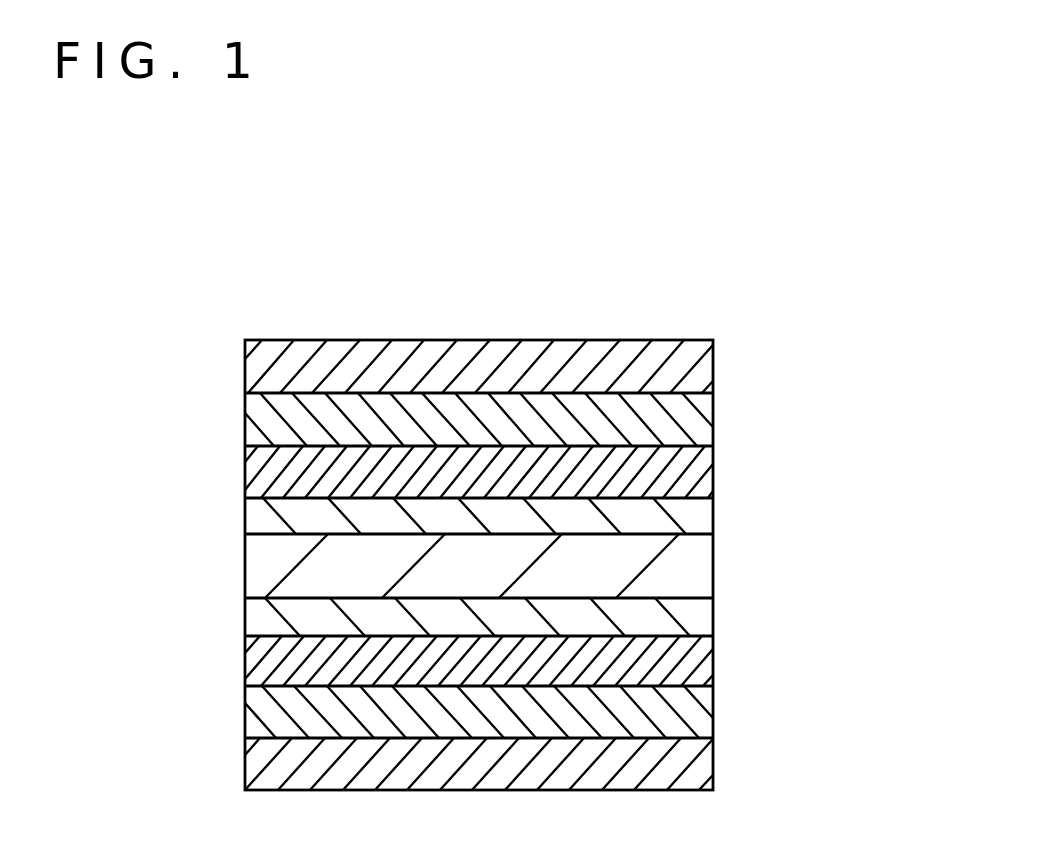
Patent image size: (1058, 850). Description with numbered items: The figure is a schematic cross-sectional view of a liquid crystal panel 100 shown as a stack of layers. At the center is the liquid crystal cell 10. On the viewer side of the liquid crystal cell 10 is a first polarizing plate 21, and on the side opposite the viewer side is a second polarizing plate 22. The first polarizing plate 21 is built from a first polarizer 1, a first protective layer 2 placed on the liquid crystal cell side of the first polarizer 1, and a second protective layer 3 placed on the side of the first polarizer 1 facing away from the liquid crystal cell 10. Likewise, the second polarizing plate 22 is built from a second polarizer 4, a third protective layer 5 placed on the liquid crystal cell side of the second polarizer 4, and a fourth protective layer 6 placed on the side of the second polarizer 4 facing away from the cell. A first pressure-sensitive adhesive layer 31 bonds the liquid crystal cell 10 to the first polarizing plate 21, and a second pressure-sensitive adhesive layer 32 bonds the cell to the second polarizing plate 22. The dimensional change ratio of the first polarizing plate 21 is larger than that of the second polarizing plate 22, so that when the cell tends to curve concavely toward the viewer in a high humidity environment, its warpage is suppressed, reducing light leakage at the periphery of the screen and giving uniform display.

The liquid crystal panel 100 is at (790, 263).
The first polarizing plate 21 is at (466, 417).
The second polarizing plate 22 is at (466, 712).
The second protective layer 3 is at (272, 368).
The first polarizer 1 is at (270, 419).
The first protective layer 2 is at (276, 472).
The first pressure-sensitive adhesive layer 31 is at (687, 513).
The liquid crystal cell 10 is at (690, 563).
The second pressure-sensitive adhesive layer 32 is at (687, 617).
The third protective layer 5 is at (272, 664).
The second polarizer 4 is at (270, 718).
The fourth protective layer 6 is at (272, 770).